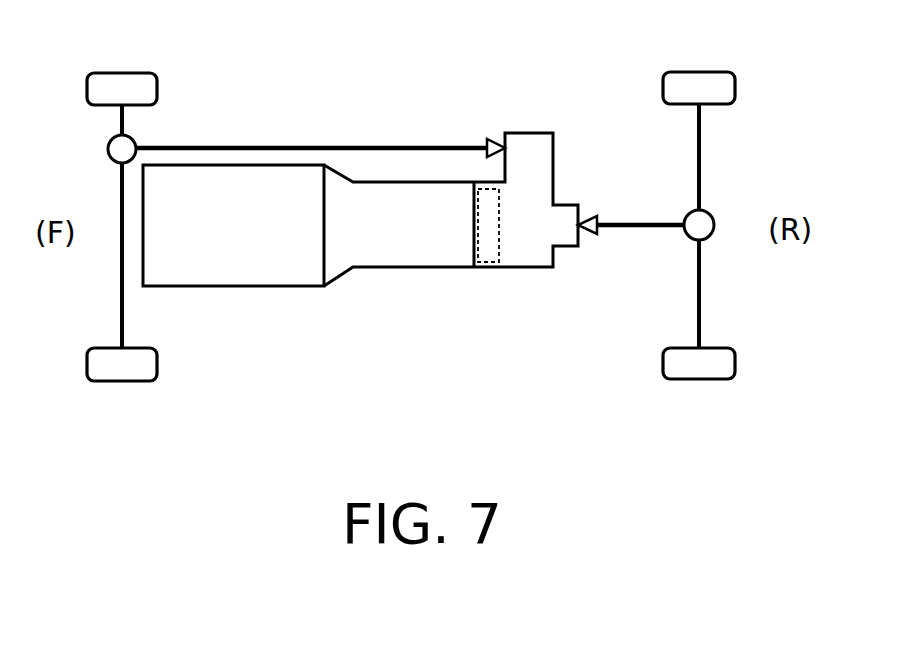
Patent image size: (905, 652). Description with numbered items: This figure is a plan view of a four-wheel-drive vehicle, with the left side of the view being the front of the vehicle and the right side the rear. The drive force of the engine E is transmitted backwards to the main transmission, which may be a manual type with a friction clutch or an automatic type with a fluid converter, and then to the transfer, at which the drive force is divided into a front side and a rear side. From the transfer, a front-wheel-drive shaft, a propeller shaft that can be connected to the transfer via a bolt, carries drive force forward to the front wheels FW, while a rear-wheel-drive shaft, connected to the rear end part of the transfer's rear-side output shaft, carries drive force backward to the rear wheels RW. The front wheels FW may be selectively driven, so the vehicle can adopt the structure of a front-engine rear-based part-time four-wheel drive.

The front wheels FW is at (123, 74).
The rear wheels RW is at (701, 73).
The engine E is at (225, 275).